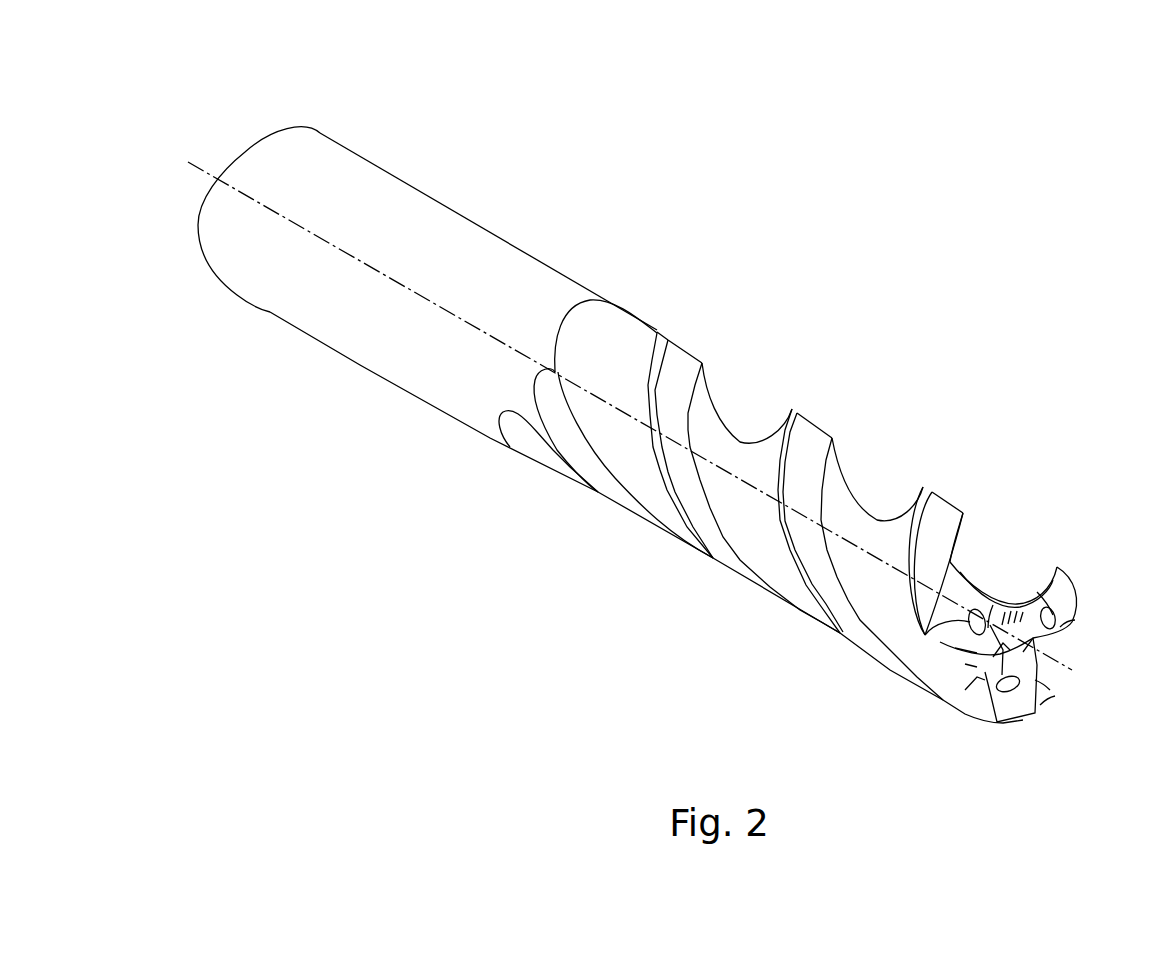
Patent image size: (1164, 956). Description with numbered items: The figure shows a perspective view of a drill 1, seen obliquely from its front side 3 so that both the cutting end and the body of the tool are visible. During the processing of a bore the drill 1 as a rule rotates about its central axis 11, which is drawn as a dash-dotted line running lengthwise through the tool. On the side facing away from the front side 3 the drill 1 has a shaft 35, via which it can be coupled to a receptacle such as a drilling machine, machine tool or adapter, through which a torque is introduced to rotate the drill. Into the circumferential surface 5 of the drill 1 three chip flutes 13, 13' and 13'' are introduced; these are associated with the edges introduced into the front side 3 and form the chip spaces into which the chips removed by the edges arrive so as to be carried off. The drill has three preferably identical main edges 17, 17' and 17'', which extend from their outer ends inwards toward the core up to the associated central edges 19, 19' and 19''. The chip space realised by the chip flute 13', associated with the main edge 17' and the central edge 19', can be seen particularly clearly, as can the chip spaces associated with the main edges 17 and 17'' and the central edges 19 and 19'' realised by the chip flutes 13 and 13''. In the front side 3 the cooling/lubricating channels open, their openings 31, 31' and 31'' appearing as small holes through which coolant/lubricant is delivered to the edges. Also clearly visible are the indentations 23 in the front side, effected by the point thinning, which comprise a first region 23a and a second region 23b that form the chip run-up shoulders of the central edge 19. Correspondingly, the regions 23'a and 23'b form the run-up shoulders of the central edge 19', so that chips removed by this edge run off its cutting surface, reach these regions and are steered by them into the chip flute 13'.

The drill 1 is at (520, 216).
The front side 3 is at (1052, 652).
The circumferential surface 5 is at (813, 422).
The central axis 11 is at (200, 160).
The chip flute 13 is at (606, 429).
The chip flute 13' is at (882, 569).
The chip flute 13'' is at (765, 498).
The main edge 17 is at (1060, 553).
The main edge 17' is at (907, 691).
The main edge 17'' is at (1082, 726).
The central edge 19 is at (1110, 632).
The central edge 19' is at (997, 559).
The central edge 19'' is at (1082, 701).
The indentation 23 is at (964, 714).
The first region 23a is at (1060, 572).
The second region 23b is at (1012, 588).
The region 23'a is at (919, 726).
The region 23'b is at (908, 709).
The opening 31 is at (1101, 612).
The opening 31' is at (898, 660).
The opening 31'' is at (1000, 740).
The shaft 35 is at (282, 308).